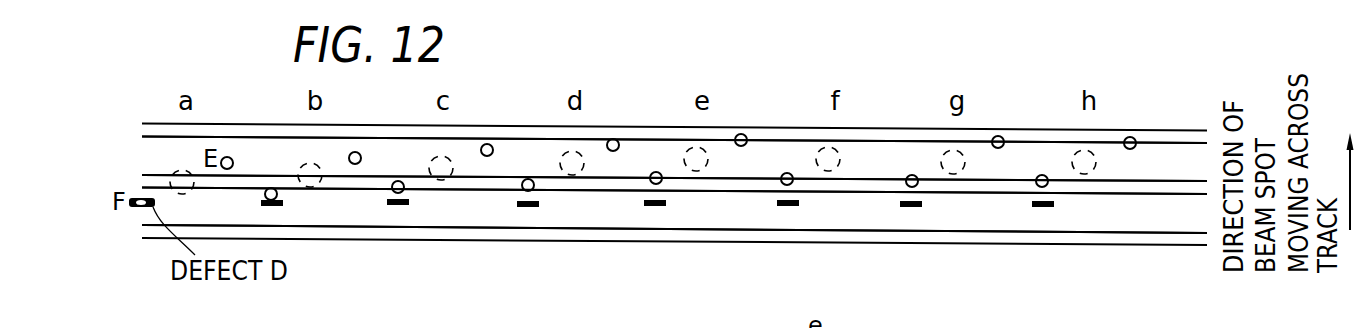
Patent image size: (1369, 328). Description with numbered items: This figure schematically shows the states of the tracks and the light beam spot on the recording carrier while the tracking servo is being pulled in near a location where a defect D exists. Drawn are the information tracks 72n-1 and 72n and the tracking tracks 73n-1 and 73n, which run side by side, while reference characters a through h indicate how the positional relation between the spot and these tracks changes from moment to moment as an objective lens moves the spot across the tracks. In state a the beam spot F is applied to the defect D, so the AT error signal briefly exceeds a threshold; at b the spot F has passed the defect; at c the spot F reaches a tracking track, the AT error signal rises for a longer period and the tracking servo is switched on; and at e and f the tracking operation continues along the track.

The information track 72n is at (147, 158).
The tracking track 73n is at (147, 180).
The information track 72n-1 is at (147, 218).
The tracking track 73n-1 is at (147, 232).